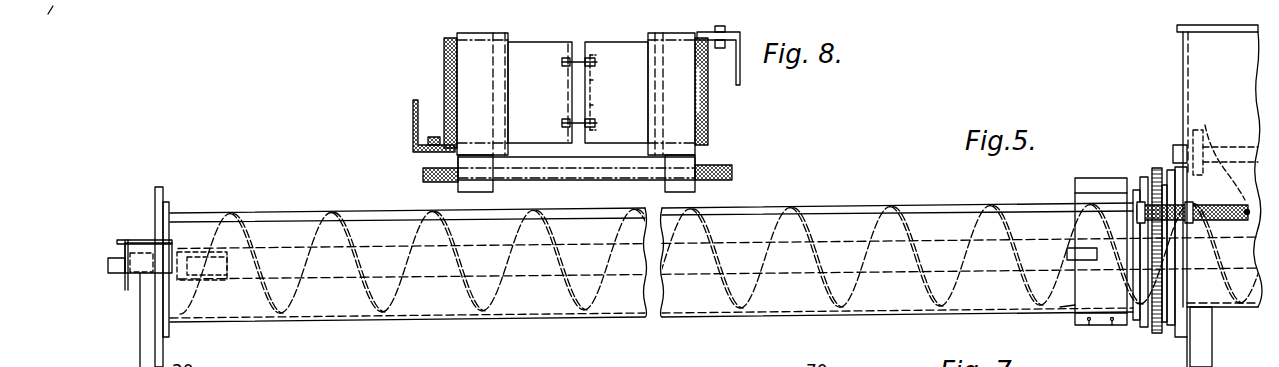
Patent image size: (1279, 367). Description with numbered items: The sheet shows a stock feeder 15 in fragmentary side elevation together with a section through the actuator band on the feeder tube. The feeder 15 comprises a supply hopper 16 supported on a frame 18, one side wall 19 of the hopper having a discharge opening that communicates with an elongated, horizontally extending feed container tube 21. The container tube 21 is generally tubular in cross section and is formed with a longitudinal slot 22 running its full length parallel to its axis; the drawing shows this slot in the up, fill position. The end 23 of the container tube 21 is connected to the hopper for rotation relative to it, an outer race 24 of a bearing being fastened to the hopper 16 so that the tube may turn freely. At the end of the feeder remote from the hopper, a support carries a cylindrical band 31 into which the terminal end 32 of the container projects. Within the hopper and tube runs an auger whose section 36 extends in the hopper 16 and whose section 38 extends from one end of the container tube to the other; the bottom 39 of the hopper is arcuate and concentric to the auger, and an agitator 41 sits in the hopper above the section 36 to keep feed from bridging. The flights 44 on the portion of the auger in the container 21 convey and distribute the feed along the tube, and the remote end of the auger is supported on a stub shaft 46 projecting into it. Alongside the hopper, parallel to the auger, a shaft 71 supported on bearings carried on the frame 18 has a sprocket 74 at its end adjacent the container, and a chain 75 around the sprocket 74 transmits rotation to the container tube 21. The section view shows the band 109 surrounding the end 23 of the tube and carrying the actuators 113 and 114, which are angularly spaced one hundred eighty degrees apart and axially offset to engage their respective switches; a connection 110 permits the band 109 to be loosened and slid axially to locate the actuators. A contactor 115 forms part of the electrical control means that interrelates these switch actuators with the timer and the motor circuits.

In FIG. 5, the stock feeder 15 is at (1107, 124).
In FIG. 5, the supply hopper 16 is at (1197, 70).
In FIG. 5, the frame 18 is at (1212, 357).
In FIG. 5, the side wall 19 is at (1187, 350).
In FIG. 8, the feed container tube 21 is at (445, 57).
In FIG. 5, the feed container tube 21 is at (787, 318).
In FIG. 8, the longitudinal slot 22 is at (508, 65).
In FIG. 8, the end of container 23 is at (700, 160).
In FIG. 5, the end of container 23 is at (1065, 306).
In FIG. 5, the outer race 24 is at (1181, 257).
In FIG. 5, the cylindrical band 31 is at (168, 210).
In FIG. 5, the terminal end 32 is at (200, 214).
In FIG. 5, the auger section 36 is at (1238, 286).
In FIG. 5, the auger section 38 is at (856, 290).
In FIG. 5, the bottom 39 is at (1226, 308).
In FIG. 5, the agitator 41 is at (1210, 130).
In FIG. 5, the flights 44 is at (1030, 289).
In FIG. 5, the stub shaft 46 is at (210, 272).
In FIG. 5, the shaft 71 is at (1242, 208).
In FIG. 5, the sprocket 74 is at (1163, 198).
In FIG. 5, the chain 75 is at (1157, 170).
In FIG. 8, the band 109 is at (612, 52).
In FIG. 5, the band 109 is at (1101, 251).
In FIG. 8, the connection 110 is at (597, 88).
In FIG. 5, the connection 110 is at (1100, 324).
In FIG. 8, the actuator 113 is at (740, 78).
In FIG. 8, the actuator 114 is at (411, 119).
In FIG. 5, the contactor 115 is at (1067, 254).